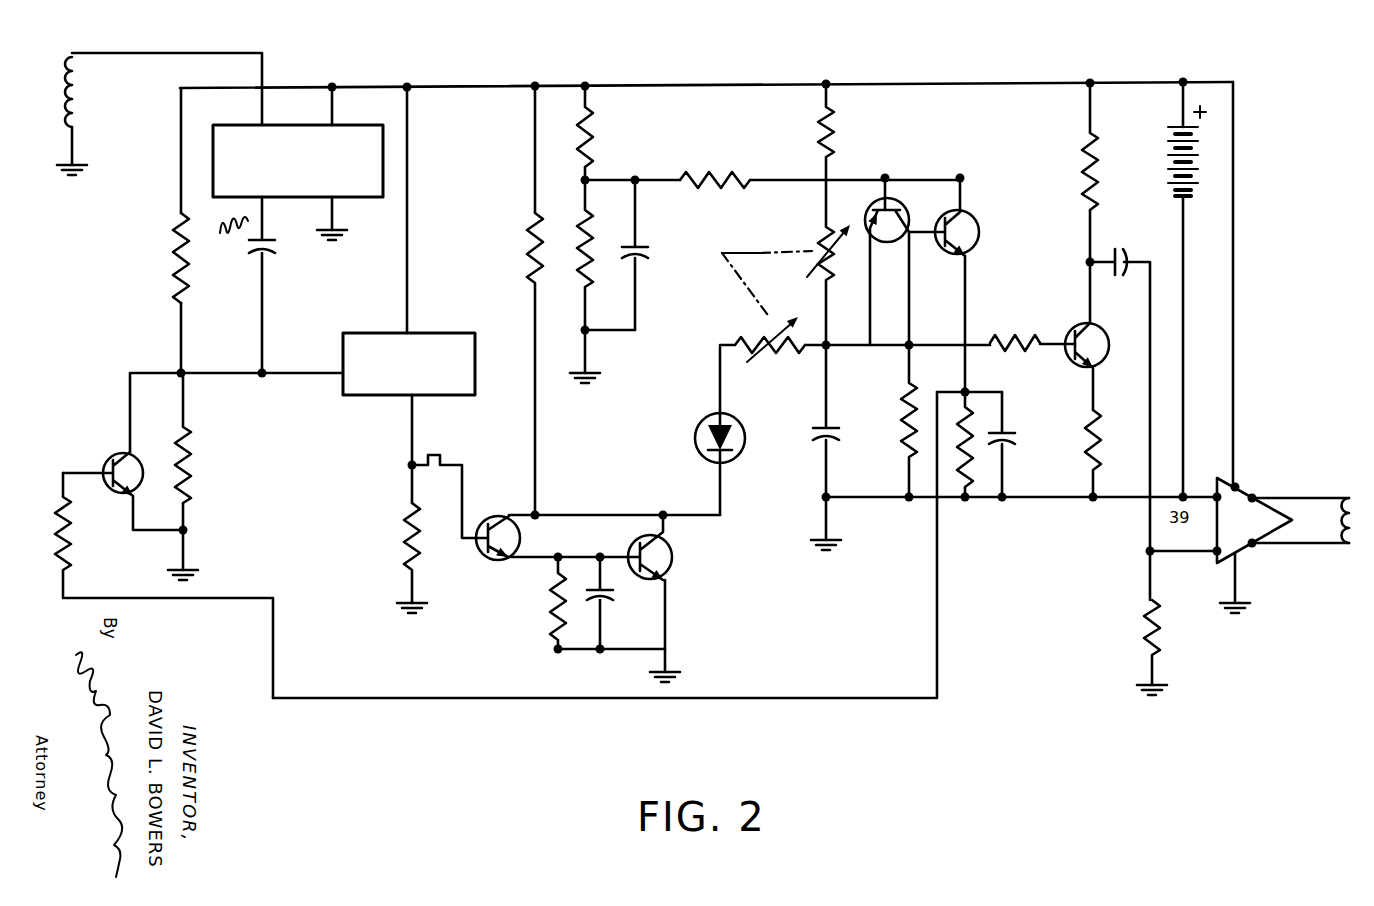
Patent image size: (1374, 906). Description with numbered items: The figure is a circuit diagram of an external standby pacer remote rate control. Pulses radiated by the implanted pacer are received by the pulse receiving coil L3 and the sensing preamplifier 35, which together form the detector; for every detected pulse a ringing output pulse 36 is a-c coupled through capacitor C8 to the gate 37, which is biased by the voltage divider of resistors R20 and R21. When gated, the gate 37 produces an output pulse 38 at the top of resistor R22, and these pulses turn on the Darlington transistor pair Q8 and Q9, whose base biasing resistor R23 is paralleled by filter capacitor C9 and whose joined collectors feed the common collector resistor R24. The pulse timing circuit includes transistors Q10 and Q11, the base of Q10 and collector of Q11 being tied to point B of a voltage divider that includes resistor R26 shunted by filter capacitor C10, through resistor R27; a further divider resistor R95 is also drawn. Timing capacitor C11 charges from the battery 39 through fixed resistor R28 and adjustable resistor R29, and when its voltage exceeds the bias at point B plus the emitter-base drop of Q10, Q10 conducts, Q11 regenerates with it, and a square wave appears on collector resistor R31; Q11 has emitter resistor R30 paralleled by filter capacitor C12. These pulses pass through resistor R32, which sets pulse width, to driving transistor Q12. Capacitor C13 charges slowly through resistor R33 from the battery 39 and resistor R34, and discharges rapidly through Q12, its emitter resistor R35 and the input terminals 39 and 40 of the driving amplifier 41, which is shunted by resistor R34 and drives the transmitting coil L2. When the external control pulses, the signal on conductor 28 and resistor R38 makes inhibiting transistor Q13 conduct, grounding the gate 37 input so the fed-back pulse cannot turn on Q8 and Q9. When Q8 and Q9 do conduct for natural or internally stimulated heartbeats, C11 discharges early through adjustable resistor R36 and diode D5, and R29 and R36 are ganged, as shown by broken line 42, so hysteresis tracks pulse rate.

The pulse receiving coil L3 is at (88, 92).
The sensing preamplifier 35 is at (287, 125).
The ringing output pulse 36 is at (224, 232).
The capacitor C8 is at (270, 260).
The resistor R21 is at (174, 256).
The inhibiting transistor Q13 is at (110, 454).
The resistor R20 is at (192, 456).
The resistor R38 is at (78, 528).
The conductor 28 is at (539, 698).
The gate 37 is at (440, 333).
The output pulse 38 is at (450, 485).
The resistor R22 is at (403, 531).
The transistor Q8 is at (520, 532).
The transistor Q9 is at (673, 554).
The base biasing resistor R23 is at (548, 612).
The filter capacitor C9 is at (609, 598).
The common collector resistor R24 is at (528, 240).
The resistor R95 is at (577, 119).
The point B is at (591, 179).
The resistor R26 is at (578, 258).
The filter capacitor C10 is at (653, 254).
The resistor R27 is at (709, 168).
The fixed resistor R28 is at (834, 128).
The adjustable resistor R29 is at (813, 260).
The broken line 42 is at (758, 253).
The diode D5 is at (698, 430).
The adjustable resistor R36 is at (777, 356).
The timing capacitor C11 is at (819, 436).
The transistor Q10 is at (903, 206).
The transistor Q11 is at (973, 218).
The collector resistor R31 is at (903, 424).
The emitter resistor R30 is at (961, 462).
The filter capacitor C12 is at (1024, 447).
The resistor R32 is at (1017, 333).
The driving transistor Q12 is at (1103, 330).
The resistor R33 is at (1098, 170).
The emitter resistor R35 is at (1108, 448).
The capacitor C13 is at (1121, 248).
The resistor R34 is at (1143, 621).
The battery 39 is at (1208, 161).
The input terminal 40 is at (1184, 544).
The driving amplifier 41 is at (1234, 504).
The transmitting coil L2 is at (1351, 500).